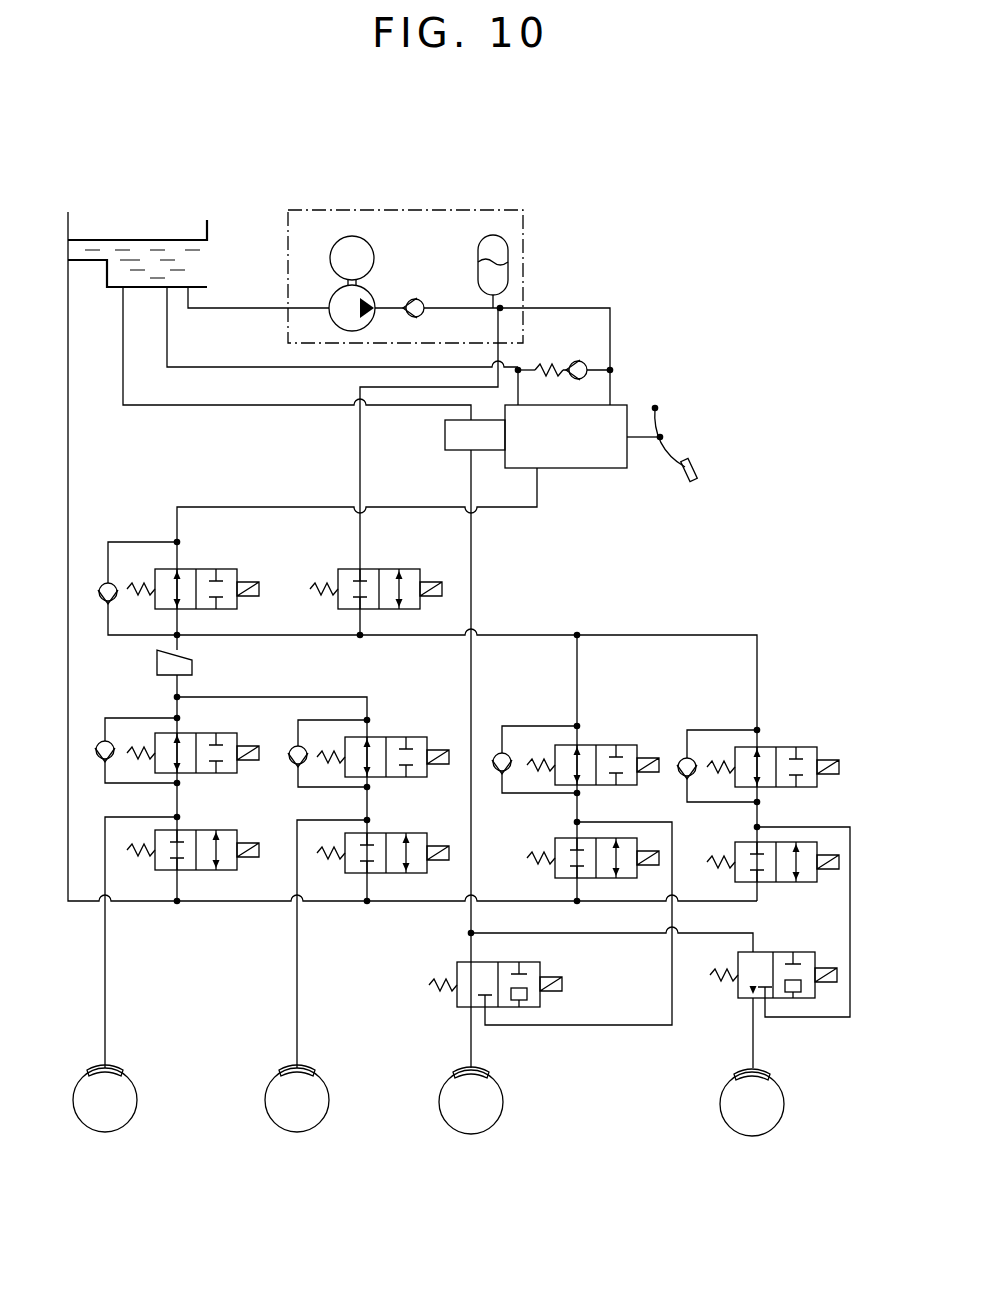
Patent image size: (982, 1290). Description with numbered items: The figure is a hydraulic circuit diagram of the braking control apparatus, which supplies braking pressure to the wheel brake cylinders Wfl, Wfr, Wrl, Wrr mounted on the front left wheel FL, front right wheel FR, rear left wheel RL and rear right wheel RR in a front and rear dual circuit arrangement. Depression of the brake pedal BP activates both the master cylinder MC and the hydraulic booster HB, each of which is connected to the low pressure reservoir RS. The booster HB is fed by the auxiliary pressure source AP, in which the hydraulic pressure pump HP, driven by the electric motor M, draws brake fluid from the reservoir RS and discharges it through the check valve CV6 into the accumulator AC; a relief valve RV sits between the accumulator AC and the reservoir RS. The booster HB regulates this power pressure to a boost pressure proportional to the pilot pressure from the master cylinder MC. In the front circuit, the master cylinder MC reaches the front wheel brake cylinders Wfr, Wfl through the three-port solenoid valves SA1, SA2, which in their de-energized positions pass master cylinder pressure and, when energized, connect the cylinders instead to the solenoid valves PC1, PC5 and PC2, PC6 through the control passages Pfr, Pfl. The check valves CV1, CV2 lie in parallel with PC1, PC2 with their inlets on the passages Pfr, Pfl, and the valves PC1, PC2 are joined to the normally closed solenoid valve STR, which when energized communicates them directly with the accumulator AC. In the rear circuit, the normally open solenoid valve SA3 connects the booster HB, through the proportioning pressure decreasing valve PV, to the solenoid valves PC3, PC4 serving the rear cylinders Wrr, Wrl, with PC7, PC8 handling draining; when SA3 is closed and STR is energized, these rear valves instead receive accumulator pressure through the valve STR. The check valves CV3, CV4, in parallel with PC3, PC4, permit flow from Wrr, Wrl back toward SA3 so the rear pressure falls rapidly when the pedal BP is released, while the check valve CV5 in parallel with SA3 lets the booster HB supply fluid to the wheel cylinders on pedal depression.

The low pressure reservoir RS is at (207, 225).
The auxiliary pressure source AP is at (523, 266).
The electric motor M is at (352, 260).
The hydraulic pressure pump HP is at (332, 301).
The check valve CV6 is at (413, 300).
The accumulator AC is at (478, 240).
The relief valve RV is at (551, 362).
The hydraulic booster HB is at (566, 436).
The master cylinder MC is at (447, 433).
The brake pedal BP is at (688, 452).
The check valve CV5 is at (103, 582).
The solenoid valve SA3 is at (188, 572).
The solenoid valve STR is at (371, 572).
The proportioning pressure decreasing valve PV is at (192, 665).
The check valve CV4 is at (100, 742).
The solenoid valve PC4 is at (207, 733).
The solenoid valve PC8 is at (207, 830).
The check valve CV3 is at (289, 762).
The solenoid valve PC3 is at (383, 737).
The solenoid valve PC7 is at (383, 833).
The check valve CV2 is at (500, 751).
The solenoid valve PC2 is at (588, 745).
The solenoid valve PC6 is at (561, 838).
The check valve CV1 is at (684, 756).
The solenoid valve PC1 is at (764, 747).
The solenoid valve PC5 is at (748, 842).
The solenoid valve SA2 is at (535, 962).
The solenoid valve SA1 is at (758, 952).
The control passage Pfl is at (640, 1025).
The control passage Pfr is at (812, 1017).
The wheel brake cylinder Wrl is at (121, 1064).
The wheel brake cylinder Wrr is at (313, 1064).
The wheel brake cylinder Wfl is at (487, 1068).
The wheel brake cylinder Wfr is at (770, 1072).
The rear left wheel RL is at (105, 1100).
The rear right wheel RR is at (297, 1100).
The front left wheel FL is at (471, 1102).
The front right wheel FR is at (752, 1104).